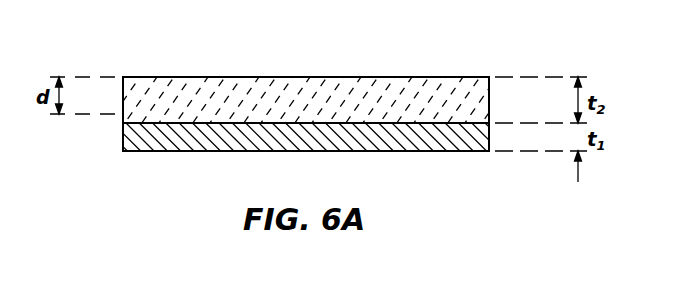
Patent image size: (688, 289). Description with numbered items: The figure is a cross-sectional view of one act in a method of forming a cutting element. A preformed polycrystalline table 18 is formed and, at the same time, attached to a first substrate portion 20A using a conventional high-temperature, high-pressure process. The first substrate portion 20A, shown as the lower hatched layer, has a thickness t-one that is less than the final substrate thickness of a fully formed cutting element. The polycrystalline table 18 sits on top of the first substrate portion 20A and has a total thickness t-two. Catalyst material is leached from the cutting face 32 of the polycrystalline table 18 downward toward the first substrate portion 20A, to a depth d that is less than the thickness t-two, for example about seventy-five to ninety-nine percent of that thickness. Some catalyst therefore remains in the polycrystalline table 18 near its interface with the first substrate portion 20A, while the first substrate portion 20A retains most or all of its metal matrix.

The polycrystalline table 18 is at (456, 92).
The cutting face 32 is at (250, 77).
The first substrate portion 20A is at (165, 125).